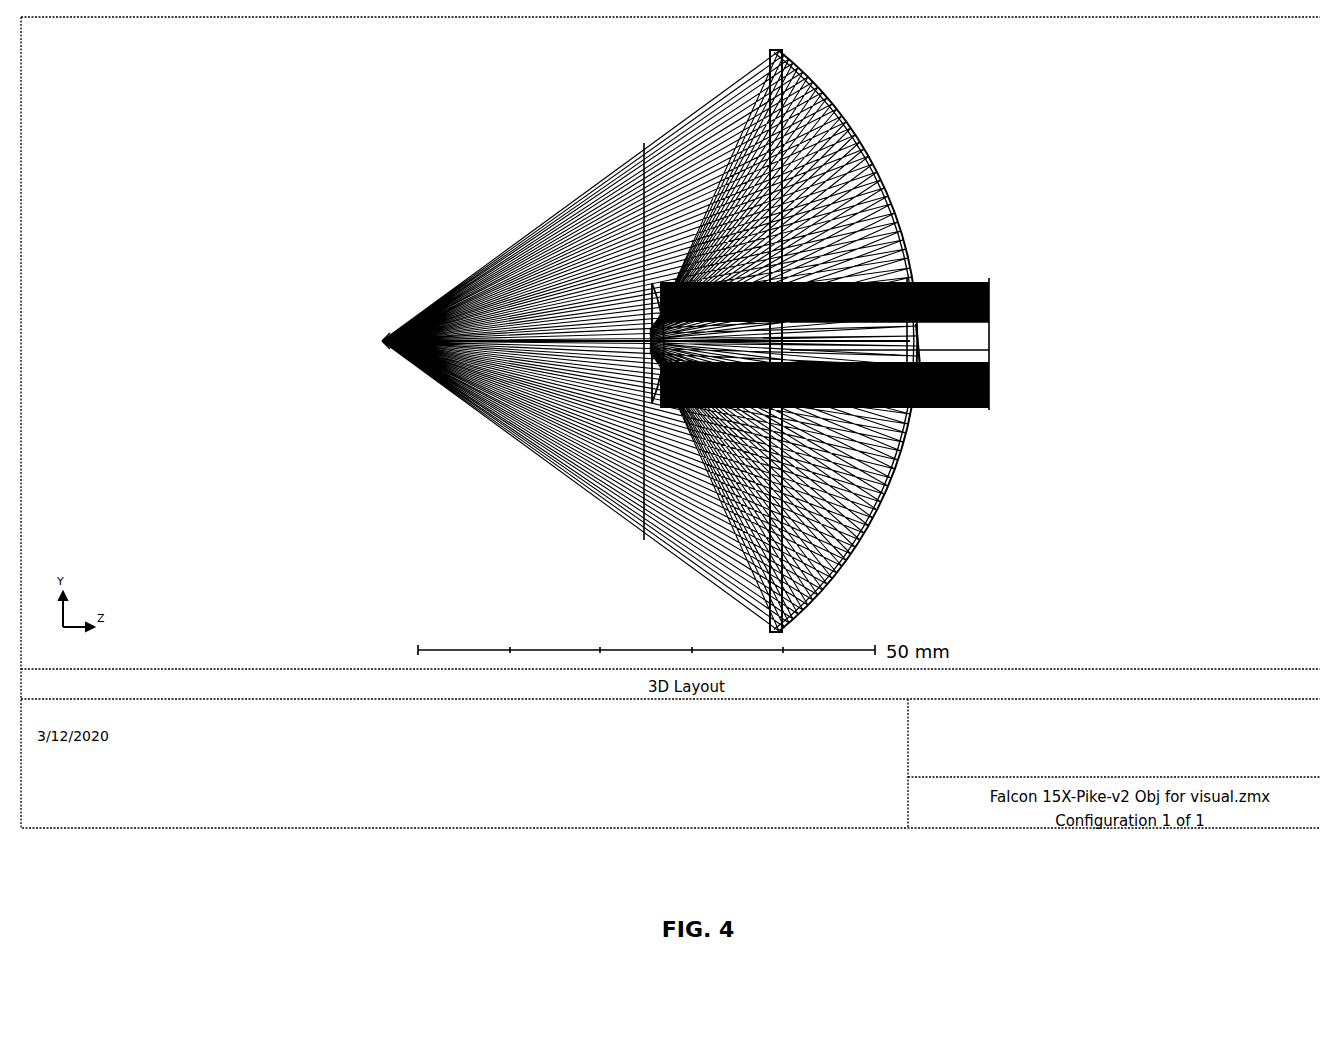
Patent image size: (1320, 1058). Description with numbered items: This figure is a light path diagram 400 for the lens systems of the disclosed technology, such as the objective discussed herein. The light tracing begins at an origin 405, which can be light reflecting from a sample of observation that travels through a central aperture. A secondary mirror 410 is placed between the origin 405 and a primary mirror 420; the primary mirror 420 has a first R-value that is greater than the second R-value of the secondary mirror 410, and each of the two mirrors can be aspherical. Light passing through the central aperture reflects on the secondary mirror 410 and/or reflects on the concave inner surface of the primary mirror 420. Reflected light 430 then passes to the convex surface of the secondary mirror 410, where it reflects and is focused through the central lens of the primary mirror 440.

The optical system 400 is at (368, 171).
The origin 405 is at (358, 341).
The secondary mirror 410 is at (561, 207).
The primary mirror 420 is at (862, 143).
The reflected light 430 is at (838, 450).
The central lens of the primary mirror 440 is at (917, 326).